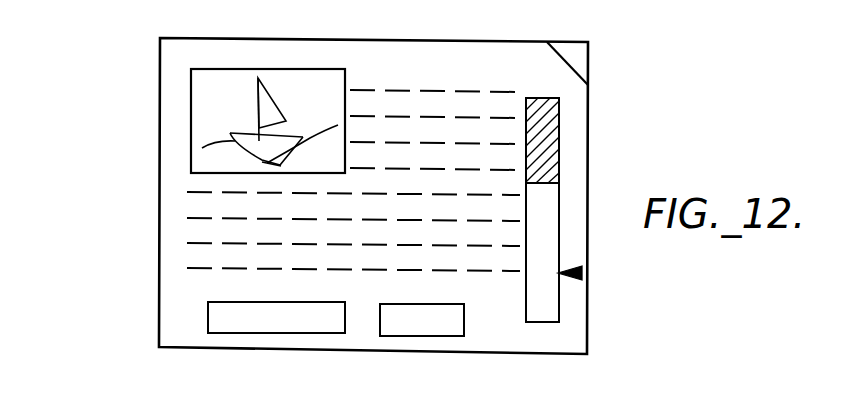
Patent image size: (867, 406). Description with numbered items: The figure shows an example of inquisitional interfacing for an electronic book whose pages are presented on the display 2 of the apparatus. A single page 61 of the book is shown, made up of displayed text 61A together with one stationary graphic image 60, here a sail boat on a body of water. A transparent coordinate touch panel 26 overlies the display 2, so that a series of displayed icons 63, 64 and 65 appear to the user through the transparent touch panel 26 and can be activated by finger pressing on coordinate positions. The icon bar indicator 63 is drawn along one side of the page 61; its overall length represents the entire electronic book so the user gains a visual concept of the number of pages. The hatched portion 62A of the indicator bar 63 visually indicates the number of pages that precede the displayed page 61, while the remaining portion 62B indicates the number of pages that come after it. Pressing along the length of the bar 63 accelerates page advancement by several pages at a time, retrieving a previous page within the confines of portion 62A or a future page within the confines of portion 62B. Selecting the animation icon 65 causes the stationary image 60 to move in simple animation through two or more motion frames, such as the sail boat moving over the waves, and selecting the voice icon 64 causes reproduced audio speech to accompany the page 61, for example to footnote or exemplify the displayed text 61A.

The display 2 is at (134, 74).
The transparent coordinate touch panel 26 is at (170, 304).
The stationary graphic image 60 is at (230, 80).
The page 61 is at (490, 65).
The text 61A is at (397, 90).
The hatched portion of indicator bar 62A is at (557, 121).
The portion of indicator bar 62B is at (548, 230).
The icon bar indicator 63 is at (582, 273).
The voice icon 64 is at (402, 337).
The animation icon 65 is at (300, 333).